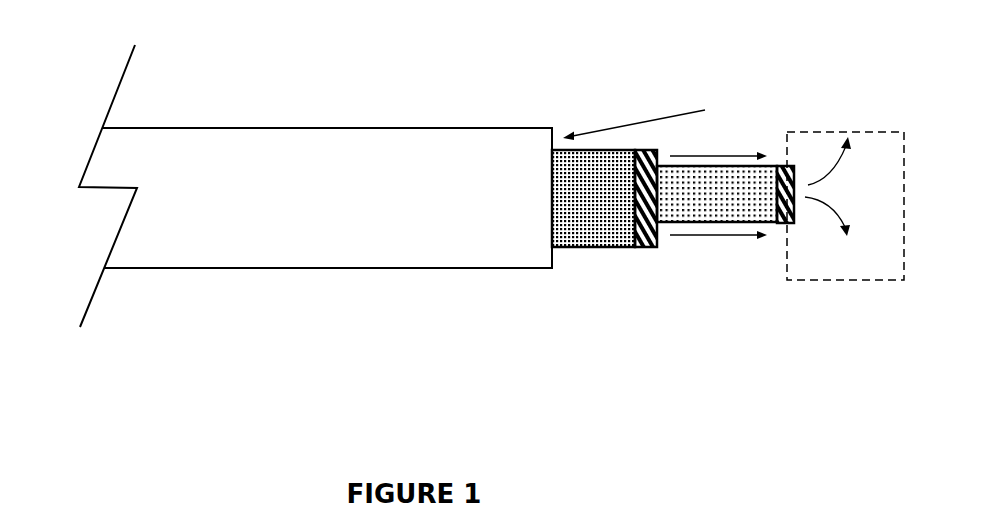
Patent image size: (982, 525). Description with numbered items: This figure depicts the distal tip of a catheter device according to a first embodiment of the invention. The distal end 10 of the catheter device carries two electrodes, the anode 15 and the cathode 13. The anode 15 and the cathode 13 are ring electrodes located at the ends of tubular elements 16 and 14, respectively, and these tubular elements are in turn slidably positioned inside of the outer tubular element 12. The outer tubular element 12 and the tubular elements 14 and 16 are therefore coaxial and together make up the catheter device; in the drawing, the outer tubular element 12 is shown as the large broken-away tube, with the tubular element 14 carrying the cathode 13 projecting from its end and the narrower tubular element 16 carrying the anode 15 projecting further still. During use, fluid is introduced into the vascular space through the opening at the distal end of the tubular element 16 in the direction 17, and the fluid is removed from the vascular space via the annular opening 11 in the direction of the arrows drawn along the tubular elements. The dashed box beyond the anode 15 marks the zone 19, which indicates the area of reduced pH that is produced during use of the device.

The distal end 10 is at (308, 84).
The annular opening 11 is at (571, 262).
The outer tubular element 12 is at (294, 209).
The cathode 13 is at (648, 150).
The tubular element 14 is at (587, 208).
The anode 15 is at (790, 163).
The tubular element 16 is at (722, 201).
The direction 17 is at (845, 186).
The zone 19 is at (823, 282).